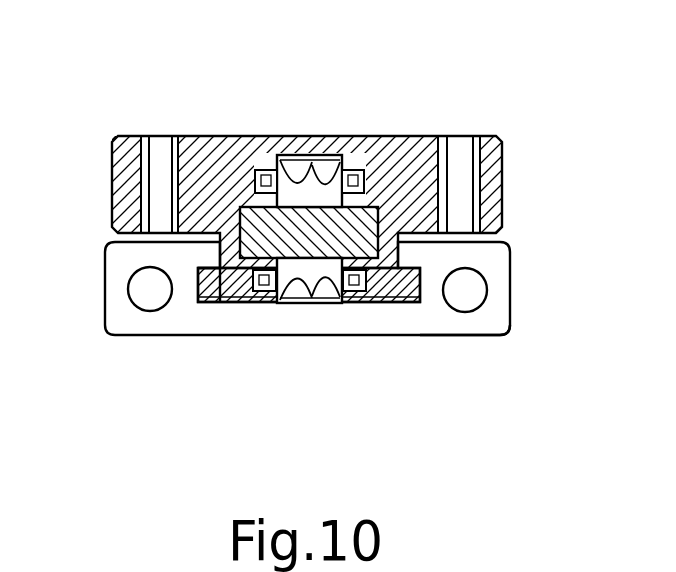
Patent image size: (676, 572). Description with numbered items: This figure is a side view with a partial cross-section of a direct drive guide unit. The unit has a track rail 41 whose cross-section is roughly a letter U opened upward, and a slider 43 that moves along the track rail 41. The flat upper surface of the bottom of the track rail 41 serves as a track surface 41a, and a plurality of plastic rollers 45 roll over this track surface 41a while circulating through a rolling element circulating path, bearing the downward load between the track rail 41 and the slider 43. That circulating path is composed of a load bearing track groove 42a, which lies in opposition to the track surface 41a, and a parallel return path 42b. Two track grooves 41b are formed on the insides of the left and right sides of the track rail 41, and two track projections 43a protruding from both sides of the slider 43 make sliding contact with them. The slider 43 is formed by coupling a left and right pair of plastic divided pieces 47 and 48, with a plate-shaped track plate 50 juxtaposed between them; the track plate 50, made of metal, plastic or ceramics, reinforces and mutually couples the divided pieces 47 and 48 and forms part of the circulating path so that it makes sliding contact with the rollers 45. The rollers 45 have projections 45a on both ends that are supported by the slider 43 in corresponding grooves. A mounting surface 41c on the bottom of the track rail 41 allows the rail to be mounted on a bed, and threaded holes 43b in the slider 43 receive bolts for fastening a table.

The track rail 41 is at (106, 340).
The track surface 41a is at (218, 302).
The track grooves 41b is at (205, 302).
The mounting surface 41c is at (485, 338).
The load bearing track groove 42a is at (310, 268).
The return path 42b is at (312, 172).
The slider 43 is at (103, 130).
The track projections 43a is at (215, 302).
The threaded holes 43b is at (153, 160).
The rollers 45 is at (290, 166).
The projections 45a is at (258, 172).
The divided piece 47 is at (213, 150).
The divided piece 48 is at (405, 140).
The track plate 50 is at (380, 208).